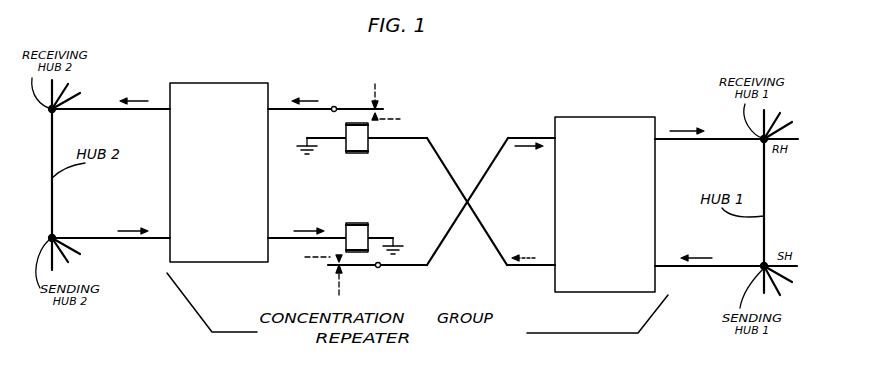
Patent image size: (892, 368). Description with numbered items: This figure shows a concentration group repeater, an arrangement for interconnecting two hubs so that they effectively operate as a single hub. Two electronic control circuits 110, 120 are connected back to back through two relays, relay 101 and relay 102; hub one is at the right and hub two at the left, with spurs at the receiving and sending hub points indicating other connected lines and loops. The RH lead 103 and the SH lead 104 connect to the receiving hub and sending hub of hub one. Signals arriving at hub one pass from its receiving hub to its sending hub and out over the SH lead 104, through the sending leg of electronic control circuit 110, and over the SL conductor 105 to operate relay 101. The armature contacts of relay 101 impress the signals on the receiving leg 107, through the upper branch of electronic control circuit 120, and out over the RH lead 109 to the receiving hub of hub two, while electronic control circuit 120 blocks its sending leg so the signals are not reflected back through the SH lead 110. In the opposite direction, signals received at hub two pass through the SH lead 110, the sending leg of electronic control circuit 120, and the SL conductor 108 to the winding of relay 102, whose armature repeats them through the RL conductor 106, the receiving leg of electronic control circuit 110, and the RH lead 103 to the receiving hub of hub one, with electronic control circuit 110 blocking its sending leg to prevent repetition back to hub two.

The relay 101 is at (357, 143).
The relay 102 is at (358, 228).
The RH lead 103 is at (700, 142).
The SH lead 104 is at (696, 268).
The SL conductor 105 is at (506, 268).
The RL conductor 106 is at (508, 136).
The receiving leg 107 is at (326, 108).
The SL conductor 108 is at (288, 240).
The RH lead 109 is at (160, 108).
The electronic control circuit 110 is at (156, 240).
The electronic control circuit 120 is at (219, 172).